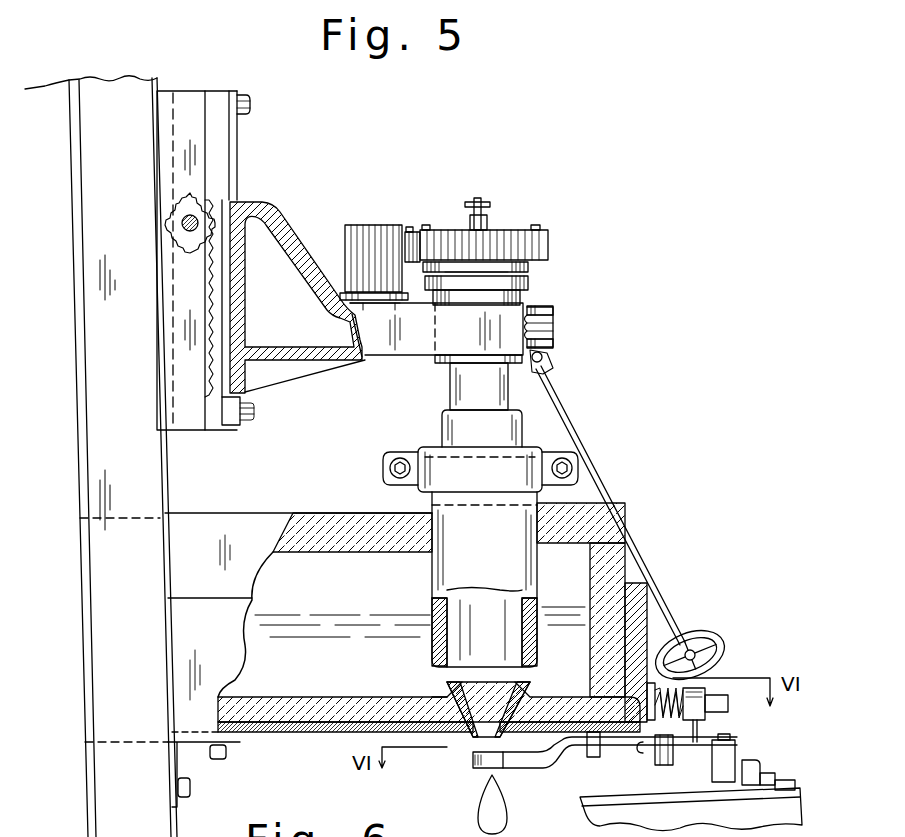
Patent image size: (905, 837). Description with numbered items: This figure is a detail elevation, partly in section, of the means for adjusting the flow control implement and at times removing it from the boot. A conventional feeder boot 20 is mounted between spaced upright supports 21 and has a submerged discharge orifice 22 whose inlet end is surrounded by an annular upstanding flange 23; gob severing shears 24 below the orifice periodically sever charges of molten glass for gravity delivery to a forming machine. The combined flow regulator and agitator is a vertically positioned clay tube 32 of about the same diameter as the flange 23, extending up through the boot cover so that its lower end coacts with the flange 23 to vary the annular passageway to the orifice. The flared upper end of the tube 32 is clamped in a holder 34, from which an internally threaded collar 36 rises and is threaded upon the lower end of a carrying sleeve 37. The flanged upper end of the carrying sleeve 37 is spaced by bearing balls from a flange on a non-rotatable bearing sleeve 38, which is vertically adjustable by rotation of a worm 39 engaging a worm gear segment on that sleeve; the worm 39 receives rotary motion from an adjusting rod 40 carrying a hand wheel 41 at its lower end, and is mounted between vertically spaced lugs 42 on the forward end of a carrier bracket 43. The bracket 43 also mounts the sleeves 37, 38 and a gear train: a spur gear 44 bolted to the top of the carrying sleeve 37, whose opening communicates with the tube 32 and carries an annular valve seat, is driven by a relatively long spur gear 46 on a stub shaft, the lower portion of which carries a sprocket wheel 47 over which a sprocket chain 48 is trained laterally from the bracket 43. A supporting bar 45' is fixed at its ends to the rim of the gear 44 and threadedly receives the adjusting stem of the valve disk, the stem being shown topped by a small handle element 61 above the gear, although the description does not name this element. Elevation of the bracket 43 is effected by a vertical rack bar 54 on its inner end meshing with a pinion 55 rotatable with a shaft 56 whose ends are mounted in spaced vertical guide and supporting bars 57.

The feeder boot 20 is at (312, 733).
The upright supports 21 is at (134, 638).
The discharge orifice 22 is at (496, 708).
The annular upstanding flange 23 is at (440, 684).
The gob severing shears 24 is at (553, 765).
The tube 32 is at (490, 538).
The holder 34 is at (488, 483).
The internally threaded collar 36 is at (445, 420).
The carrying sleeve 37 is at (450, 381).
The bearing sleeve 38 is at (528, 298).
The worm 39 is at (555, 328).
The adjusting rod 40 is at (569, 405).
The hand wheel 41 is at (706, 634).
The lugs 42 is at (552, 309).
The carrier bracket 43 is at (296, 334).
The spur gear 44 is at (420, 236).
The supporting bar 45' is at (491, 246).
The long spur gear 46 is at (363, 226).
The sprocket wheel 47 is at (341, 298).
The sprocket chain 48 is at (396, 300).
The rack bar 54 is at (230, 410).
The pinion 55 is at (162, 225).
The shaft 56 is at (183, 229).
The guide and supporting bars 57 is at (192, 95).
The crank handle 61 is at (490, 206).